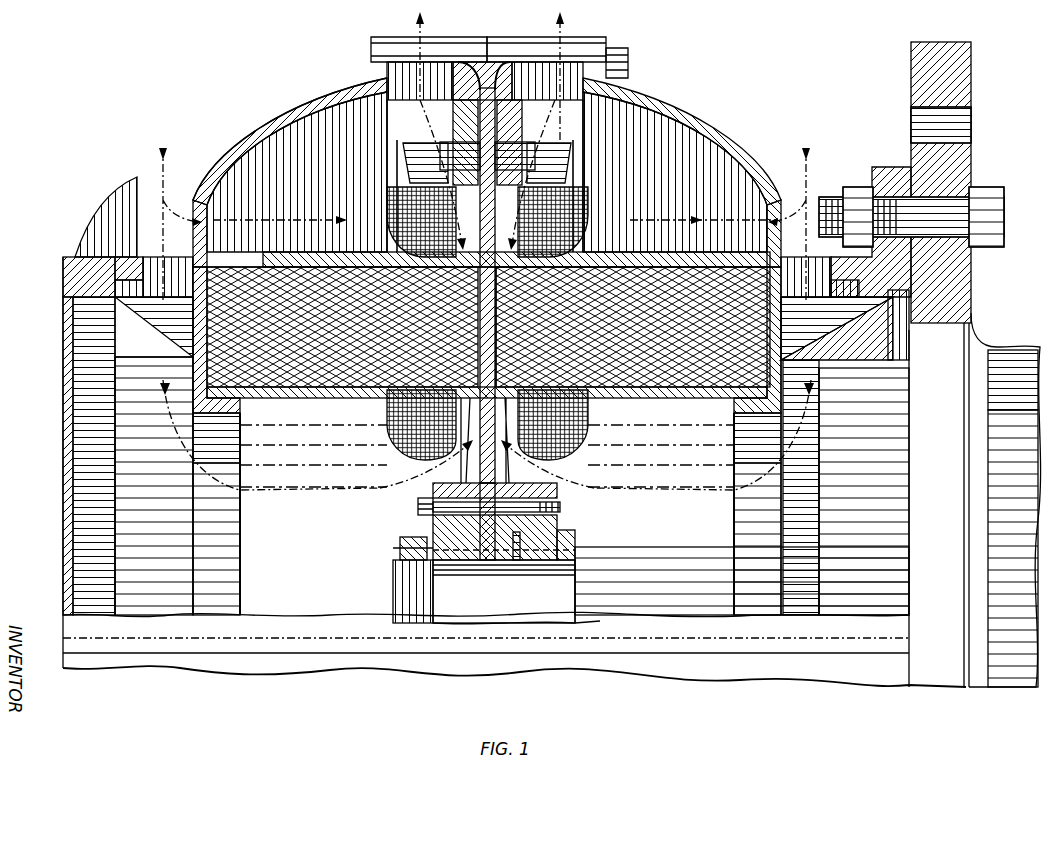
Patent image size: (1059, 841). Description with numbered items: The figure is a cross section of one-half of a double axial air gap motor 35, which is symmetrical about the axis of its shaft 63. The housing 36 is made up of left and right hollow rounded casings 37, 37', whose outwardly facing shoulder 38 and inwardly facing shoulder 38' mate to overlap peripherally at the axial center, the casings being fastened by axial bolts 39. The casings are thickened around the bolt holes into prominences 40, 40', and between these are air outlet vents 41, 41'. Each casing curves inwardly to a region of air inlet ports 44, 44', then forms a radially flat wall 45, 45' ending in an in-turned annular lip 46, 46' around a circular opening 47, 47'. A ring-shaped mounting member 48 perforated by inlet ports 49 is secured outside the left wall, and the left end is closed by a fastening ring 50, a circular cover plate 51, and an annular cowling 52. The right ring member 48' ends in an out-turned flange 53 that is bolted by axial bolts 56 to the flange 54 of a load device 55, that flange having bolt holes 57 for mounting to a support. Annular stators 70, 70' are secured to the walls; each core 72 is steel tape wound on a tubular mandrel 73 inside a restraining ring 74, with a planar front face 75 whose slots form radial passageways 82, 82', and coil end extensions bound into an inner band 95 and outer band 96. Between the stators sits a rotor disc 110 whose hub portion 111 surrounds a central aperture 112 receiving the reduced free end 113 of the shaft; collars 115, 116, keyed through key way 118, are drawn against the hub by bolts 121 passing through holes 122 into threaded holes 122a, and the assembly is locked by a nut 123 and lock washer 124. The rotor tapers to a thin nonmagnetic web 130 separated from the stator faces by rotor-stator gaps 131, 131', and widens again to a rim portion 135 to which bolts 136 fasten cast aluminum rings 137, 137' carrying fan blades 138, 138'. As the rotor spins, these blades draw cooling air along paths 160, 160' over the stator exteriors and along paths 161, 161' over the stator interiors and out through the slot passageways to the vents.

The double axial air gap motor 35 is at (42, 479).
The housing 36 is at (260, 122).
The left hand casing 37 is at (290, 141).
The right hand casing 37' is at (682, 141).
The outwardly facing circular shoulder 38 is at (469, 49).
The inwardly facing circular shoulder 38' is at (506, 49).
The axial bolts 39 is at (628, 63).
The prominences 40 is at (429, 33).
The prominences 40' is at (549, 32).
The air outlet vents 41 is at (393, 80).
The air outlet vents 41' is at (587, 81).
The air inlet ports 44 is at (182, 224).
The air inlet ports 44' is at (789, 222).
The radially flat wall 45 is at (188, 233).
The radially flat wall 45' is at (801, 233).
The in-turned annular lip 46 is at (234, 365).
The in-turned annular lip 46' is at (739, 365).
The circular opening 47 is at (200, 514).
The circular opening 47' is at (742, 514).
The ring-shaped mounting member 48 is at (154, 242).
The ring member 48' is at (820, 272).
The air inlet ports 49 is at (149, 262).
The fastening ring 50 is at (63, 272).
The circular cover plate 51 is at (70, 386).
The annular cowling 52 is at (100, 207).
The out-turned flange 53 is at (890, 167).
The flange 54 is at (968, 162).
The load device 55 is at (1005, 347).
The axial bolts 56 is at (1000, 215).
The bolt holes 57 is at (966, 126).
The shaft 63 is at (660, 556).
The left-hand annular stator 70 is at (401, 425).
The right-hand annular stator 70' is at (576, 425).
The stator core 72 is at (280, 256).
The tubular mandrel 73 is at (305, 398).
The restraining ring 74 is at (305, 258).
The annular planar front face 75 is at (480, 306).
The radial passageways 82 is at (342, 327).
The radial passageways 82' is at (633, 327).
The inner annular band 95 is at (396, 457).
The outer annular band 96 is at (386, 196).
The rotor disc 110 is at (433, 488).
The hub portion 111 is at (507, 462).
The central rotor aperture 112 is at (470, 562).
The free end of the shaft 113 is at (395, 600).
The collar 115 is at (433, 530).
The collar 116 is at (572, 532).
The key way 118 is at (596, 565).
The axial bolts 121 is at (418, 506).
The holes 122 is at (516, 560).
The threaded holes 122a is at (561, 506).
The nut 123 is at (398, 572).
The lock washer 124 is at (400, 548).
The annular web portion 130 is at (498, 312).
The rotor-stator gap 131 is at (386, 222).
The rotor-stator gap 131' is at (575, 222).
The rotor rim portion 135 is at (522, 145).
The axial bolts 136 is at (450, 145).
The cast aluminum ring 137 is at (451, 140).
The cast aluminum ring 137' is at (529, 140).
The fan blades 138 is at (416, 150).
The fan blades 138' is at (612, 136).
The air path 160 is at (297, 172).
The air path 160' is at (675, 172).
The air path 161 is at (270, 454).
The air path 161' is at (704, 452).